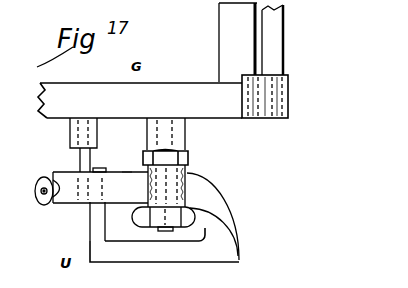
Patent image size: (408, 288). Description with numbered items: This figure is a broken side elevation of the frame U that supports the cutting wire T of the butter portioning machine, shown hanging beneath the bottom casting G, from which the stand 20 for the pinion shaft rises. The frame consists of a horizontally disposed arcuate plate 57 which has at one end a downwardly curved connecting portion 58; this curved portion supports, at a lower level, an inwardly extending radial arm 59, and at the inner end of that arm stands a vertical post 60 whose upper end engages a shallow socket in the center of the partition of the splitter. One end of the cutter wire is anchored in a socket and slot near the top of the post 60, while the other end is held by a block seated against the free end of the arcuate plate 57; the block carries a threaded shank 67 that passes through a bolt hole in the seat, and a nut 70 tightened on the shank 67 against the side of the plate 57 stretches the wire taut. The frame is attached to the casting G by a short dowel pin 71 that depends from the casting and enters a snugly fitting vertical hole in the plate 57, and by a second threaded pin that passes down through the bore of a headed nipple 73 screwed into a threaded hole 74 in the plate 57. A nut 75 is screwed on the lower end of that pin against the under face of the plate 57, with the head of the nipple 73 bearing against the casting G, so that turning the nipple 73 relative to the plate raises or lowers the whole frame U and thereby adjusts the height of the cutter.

The stand 20 is at (216, 35).
The arcuate plate 57 is at (127, 176).
The downwardly curved connecting portion 58 is at (223, 199).
The radial arm 59 is at (170, 262).
The vertical post 60 is at (101, 227).
The threaded shank 67 is at (41, 201).
The nut 70 is at (48, 207).
The dowel pin 71 is at (76, 160).
The headed nipple 73 is at (186, 163).
The threaded hole 74 is at (190, 200).
The nut 75 is at (190, 228).